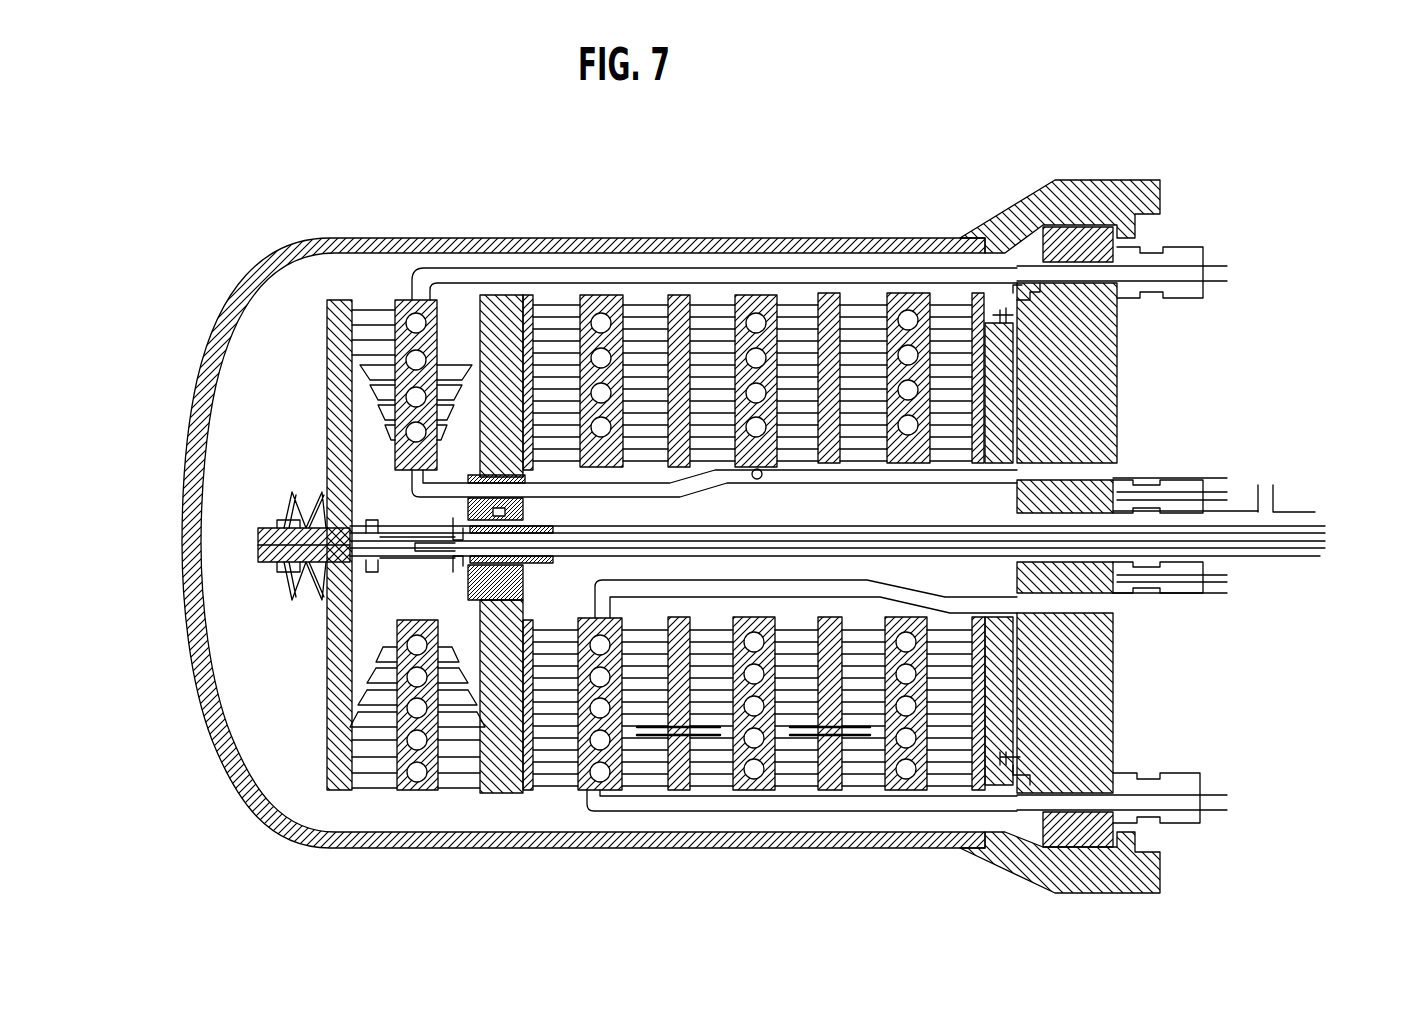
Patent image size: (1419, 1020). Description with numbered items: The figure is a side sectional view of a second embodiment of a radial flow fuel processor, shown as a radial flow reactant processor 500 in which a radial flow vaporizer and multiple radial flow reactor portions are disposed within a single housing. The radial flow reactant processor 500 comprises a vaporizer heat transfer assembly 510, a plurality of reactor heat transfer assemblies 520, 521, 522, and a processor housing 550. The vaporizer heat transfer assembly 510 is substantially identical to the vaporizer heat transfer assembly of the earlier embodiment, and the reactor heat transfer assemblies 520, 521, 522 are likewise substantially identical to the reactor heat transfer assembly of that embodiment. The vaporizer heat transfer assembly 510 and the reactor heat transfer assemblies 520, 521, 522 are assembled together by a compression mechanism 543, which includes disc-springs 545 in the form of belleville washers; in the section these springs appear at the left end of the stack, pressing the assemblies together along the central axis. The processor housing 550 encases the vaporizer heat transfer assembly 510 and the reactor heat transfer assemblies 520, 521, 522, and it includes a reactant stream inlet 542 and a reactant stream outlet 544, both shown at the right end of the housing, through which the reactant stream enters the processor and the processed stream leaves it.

The radial flow reactant processor 500 is at (237, 225).
The vaporizer heat transfer assembly 510 is at (395, 297).
The reactor heat transfer assembly 520 is at (580, 793).
The reactor heat transfer assembly 521 is at (737, 793).
The reactor heat transfer assembly 522 is at (890, 793).
The reactant stream inlet 542 is at (1330, 519).
The compression mechanism 543 is at (262, 575).
The reactant stream outlet 544 is at (1262, 498).
The disc-springs 545 is at (283, 505).
The processor housing 550 is at (945, 237).